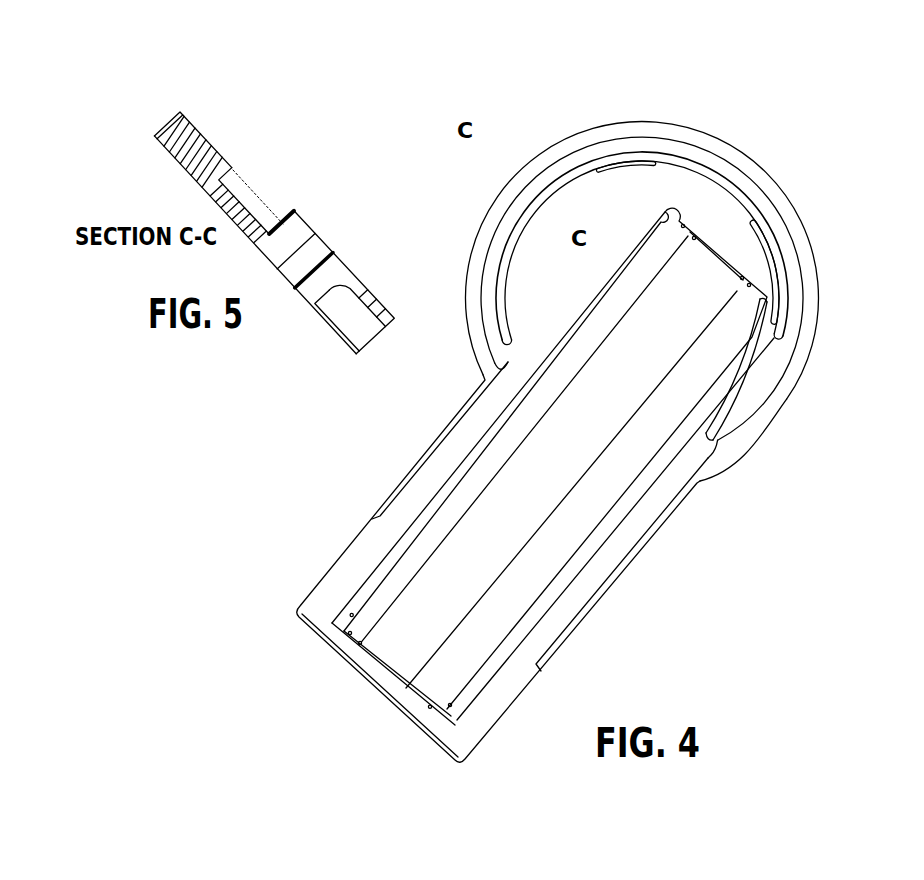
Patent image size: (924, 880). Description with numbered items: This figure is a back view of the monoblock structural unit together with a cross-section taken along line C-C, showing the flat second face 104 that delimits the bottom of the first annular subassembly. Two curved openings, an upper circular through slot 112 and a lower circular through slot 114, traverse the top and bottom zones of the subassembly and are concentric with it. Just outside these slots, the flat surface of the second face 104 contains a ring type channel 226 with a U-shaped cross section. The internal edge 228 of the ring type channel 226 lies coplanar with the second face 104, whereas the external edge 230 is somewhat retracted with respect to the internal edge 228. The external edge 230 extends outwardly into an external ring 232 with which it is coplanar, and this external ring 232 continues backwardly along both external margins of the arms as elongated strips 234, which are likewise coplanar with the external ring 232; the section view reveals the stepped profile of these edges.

In FIG. 4, the second face 104 is at (566, 276).
In FIG. 4, the upper circular through slot 112 is at (597, 165).
In FIG. 4, the lower circular through slot 114 is at (775, 378).
In FIG. 5, the ring type channel 226 is at (250, 205).
In FIG. 5, the internal edge 228 is at (295, 215).
In FIG. 4, the internal edge 228 is at (749, 209).
In FIG. 5, the external edge 230 is at (230, 168).
In FIG. 4, the external edge 230 is at (796, 271).
In FIG. 5, the external ring 232 is at (210, 142).
In FIG. 4, the external ring 232 is at (809, 323).
In FIG. 4, the elongated strips 234 is at (428, 455).